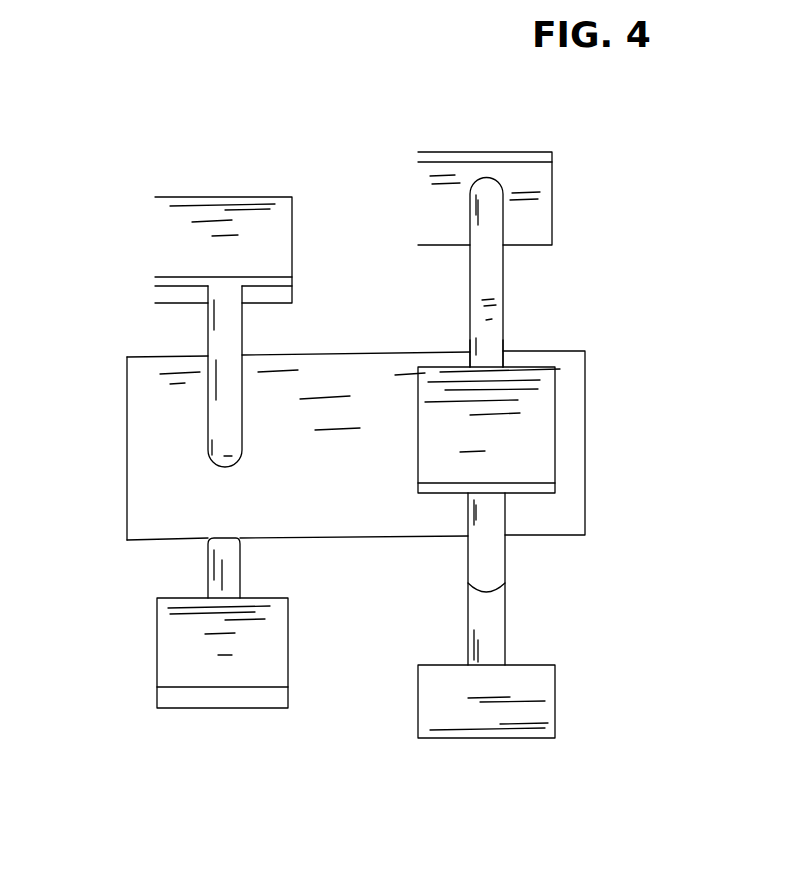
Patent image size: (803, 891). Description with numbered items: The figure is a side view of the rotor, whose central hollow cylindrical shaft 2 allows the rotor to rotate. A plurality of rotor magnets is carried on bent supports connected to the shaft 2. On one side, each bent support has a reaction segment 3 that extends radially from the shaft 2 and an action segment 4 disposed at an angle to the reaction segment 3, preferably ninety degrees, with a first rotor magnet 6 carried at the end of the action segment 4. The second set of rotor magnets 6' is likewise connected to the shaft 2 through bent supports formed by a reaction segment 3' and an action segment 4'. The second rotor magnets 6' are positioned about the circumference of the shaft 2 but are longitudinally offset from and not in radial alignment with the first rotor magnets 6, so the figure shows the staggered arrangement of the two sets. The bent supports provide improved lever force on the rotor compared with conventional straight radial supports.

The shaft 2 is at (162, 482).
The reaction segment 3 is at (141, 568).
The action segment 4 is at (140, 376).
The first rotor magnets 6 is at (160, 468).
The reaction segment 3' is at (561, 333).
The action segment 4' is at (566, 422).
The second rotor magnets 6' is at (550, 430).